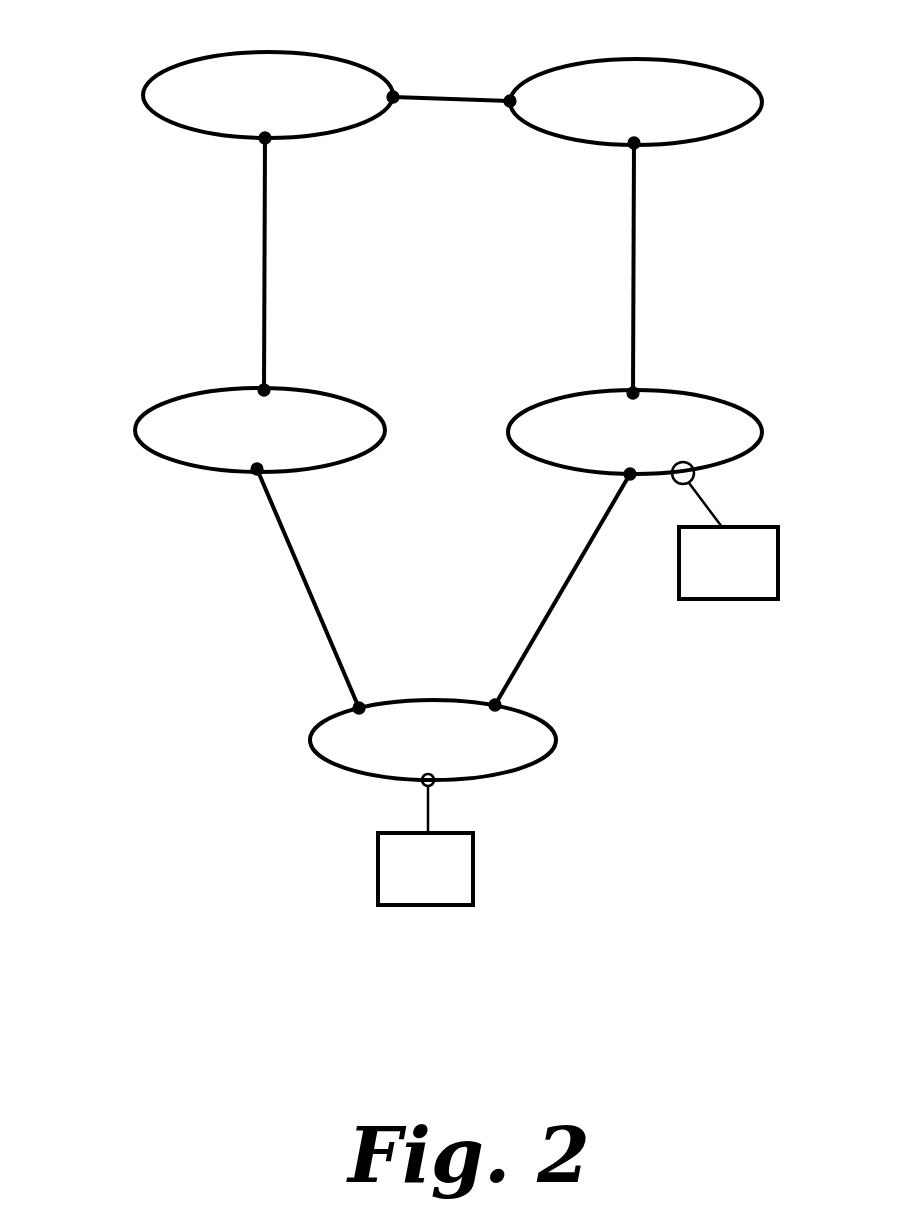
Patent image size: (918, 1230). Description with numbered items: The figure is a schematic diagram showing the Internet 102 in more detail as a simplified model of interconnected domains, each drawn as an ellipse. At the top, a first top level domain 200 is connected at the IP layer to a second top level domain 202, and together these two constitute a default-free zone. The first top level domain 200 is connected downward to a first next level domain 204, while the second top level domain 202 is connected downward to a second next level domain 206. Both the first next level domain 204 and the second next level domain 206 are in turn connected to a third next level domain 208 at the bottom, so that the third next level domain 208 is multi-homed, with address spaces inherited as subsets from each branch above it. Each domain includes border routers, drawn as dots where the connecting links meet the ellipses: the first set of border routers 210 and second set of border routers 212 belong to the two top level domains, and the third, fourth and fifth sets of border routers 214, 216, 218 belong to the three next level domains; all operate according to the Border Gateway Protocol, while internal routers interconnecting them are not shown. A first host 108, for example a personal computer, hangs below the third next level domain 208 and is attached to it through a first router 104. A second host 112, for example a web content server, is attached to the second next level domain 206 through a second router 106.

The Internet 102 is at (150, 702).
The first router 104 is at (434, 782).
The second router 106 is at (694, 474).
The first host 108 is at (453, 873).
The second host 112 is at (757, 590).
The first top level domain 200 is at (328, 56).
The second top level domain 202 is at (725, 73).
The first next level domain 204 is at (332, 395).
The second next level domain 206 is at (732, 406).
The third next level domain 208 is at (555, 753).
The first set of border routers 210 is at (393, 97).
The second set of border routers 212 is at (510, 101).
The third set of border routers 214 is at (264, 392).
The fourth set of border routers 216 is at (633, 393).
The fifth set of border routers 218 is at (495, 705).